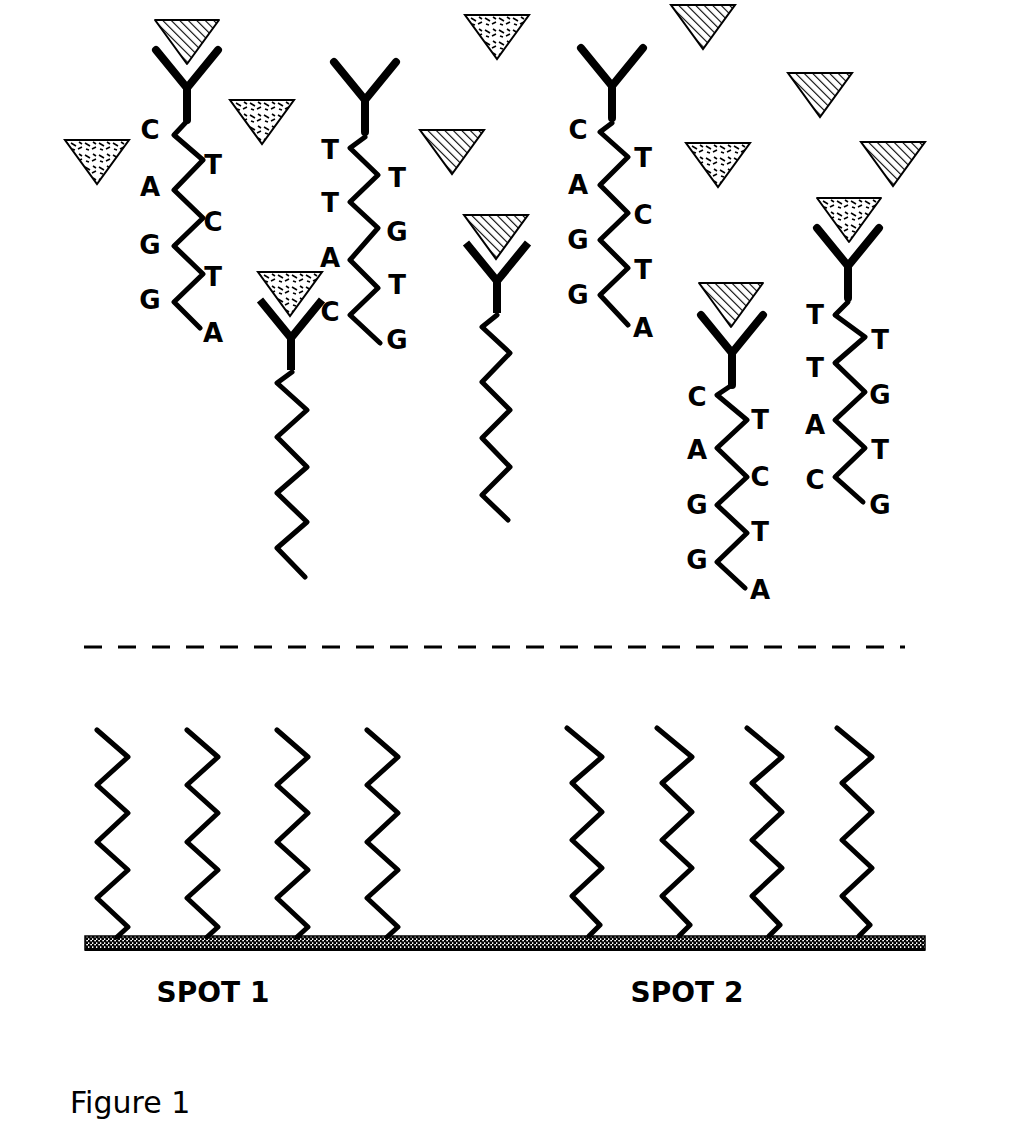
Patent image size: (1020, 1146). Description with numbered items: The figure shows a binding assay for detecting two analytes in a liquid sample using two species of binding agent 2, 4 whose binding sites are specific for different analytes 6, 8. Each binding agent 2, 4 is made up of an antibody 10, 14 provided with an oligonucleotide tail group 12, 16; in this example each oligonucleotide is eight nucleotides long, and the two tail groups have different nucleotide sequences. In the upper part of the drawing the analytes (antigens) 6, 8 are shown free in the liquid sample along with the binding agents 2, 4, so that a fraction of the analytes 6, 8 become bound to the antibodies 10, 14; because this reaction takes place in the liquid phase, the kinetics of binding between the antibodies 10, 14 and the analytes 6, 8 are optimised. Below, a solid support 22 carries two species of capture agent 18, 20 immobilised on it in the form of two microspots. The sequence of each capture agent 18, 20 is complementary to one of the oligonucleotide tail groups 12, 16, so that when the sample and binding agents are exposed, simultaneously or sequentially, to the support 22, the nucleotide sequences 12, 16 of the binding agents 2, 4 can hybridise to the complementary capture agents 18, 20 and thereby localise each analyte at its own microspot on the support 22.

The binding agent 2 is at (252, 446).
The binding agent 4 is at (513, 376).
The analyte 6 is at (290, 258).
The analyte 8 is at (462, 127).
The antibody 10 is at (268, 346).
The oligonucleotide tail group 12 is at (280, 459).
The antibody 14 is at (508, 284).
The oligonucleotide tail group 16 is at (502, 429).
The capture agent 18 is at (385, 732).
The capture agent 20 is at (862, 733).
The solid support 22 is at (512, 954).